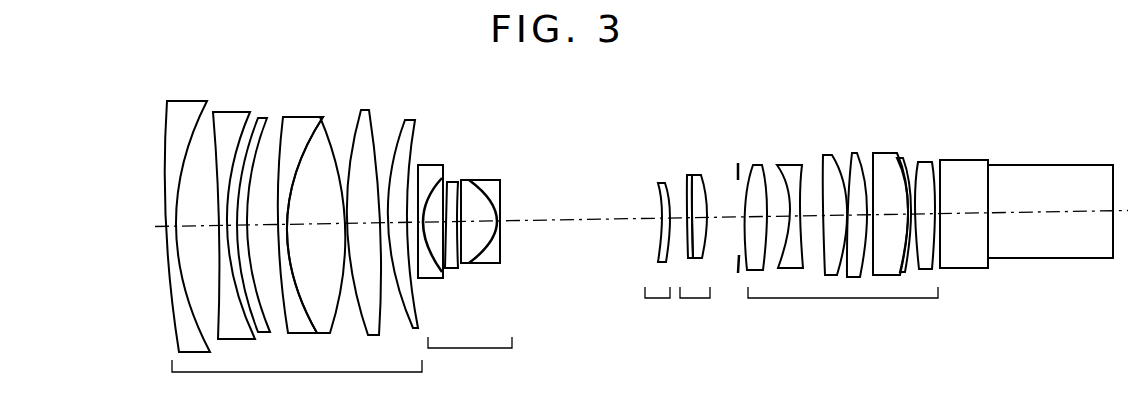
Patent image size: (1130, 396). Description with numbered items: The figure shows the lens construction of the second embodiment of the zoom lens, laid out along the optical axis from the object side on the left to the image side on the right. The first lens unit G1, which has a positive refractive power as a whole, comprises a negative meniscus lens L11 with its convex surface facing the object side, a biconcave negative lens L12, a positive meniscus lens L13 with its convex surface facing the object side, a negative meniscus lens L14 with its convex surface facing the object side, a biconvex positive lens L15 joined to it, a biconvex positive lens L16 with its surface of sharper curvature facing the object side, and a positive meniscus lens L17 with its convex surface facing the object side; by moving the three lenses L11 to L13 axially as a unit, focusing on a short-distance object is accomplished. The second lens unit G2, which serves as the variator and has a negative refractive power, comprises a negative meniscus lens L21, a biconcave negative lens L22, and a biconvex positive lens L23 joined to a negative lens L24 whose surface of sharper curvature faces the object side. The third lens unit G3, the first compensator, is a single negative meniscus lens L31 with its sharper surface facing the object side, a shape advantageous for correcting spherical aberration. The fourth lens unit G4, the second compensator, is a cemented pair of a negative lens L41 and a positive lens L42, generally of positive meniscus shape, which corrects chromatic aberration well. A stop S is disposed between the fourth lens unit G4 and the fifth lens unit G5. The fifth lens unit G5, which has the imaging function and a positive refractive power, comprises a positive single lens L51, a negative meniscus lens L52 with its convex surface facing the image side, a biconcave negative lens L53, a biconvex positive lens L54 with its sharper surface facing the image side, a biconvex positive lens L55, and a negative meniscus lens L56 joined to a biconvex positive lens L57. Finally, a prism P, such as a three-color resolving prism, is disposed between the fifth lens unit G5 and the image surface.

The negative meniscus lens L11 is at (183, 102).
The biconcave negative lens L12 is at (228, 118).
The positive meniscus lens L13 is at (260, 118).
The negative meniscus lens L14 is at (293, 120).
The biconvex positive lens L15 is at (320, 118).
The biconvex positive lens L16 is at (363, 120).
The positive meniscus lens L17 is at (405, 122).
The negative meniscus lens L21 is at (428, 172).
The biconcave negative lens L22 is at (458, 178).
The biconvex positive lens L23 is at (470, 183).
The negative lens L24 is at (492, 185).
The negative meniscus lens L31 is at (662, 185).
The negative lens L41 is at (692, 177).
The positive lens L42 is at (700, 183).
The positive single lens L51 is at (755, 167).
The negative meniscus lens L52 is at (788, 167).
The biconcave negative lens L53 is at (828, 158).
The biconvex positive lens L54 is at (855, 157).
The biconvex positive lens L55 is at (890, 157).
The negative meniscus lens L56 is at (903, 157).
The biconvex positive lens L57 is at (925, 162).
The first lens unit G1 is at (297, 378).
The second lens unit G2 is at (470, 357).
The third lens unit G3 is at (659, 308).
The fourth lens unit G4 is at (697, 308).
The fifth lens unit G5 is at (843, 307).
The stop S is at (738, 273).
The prism P is at (1120, 285).